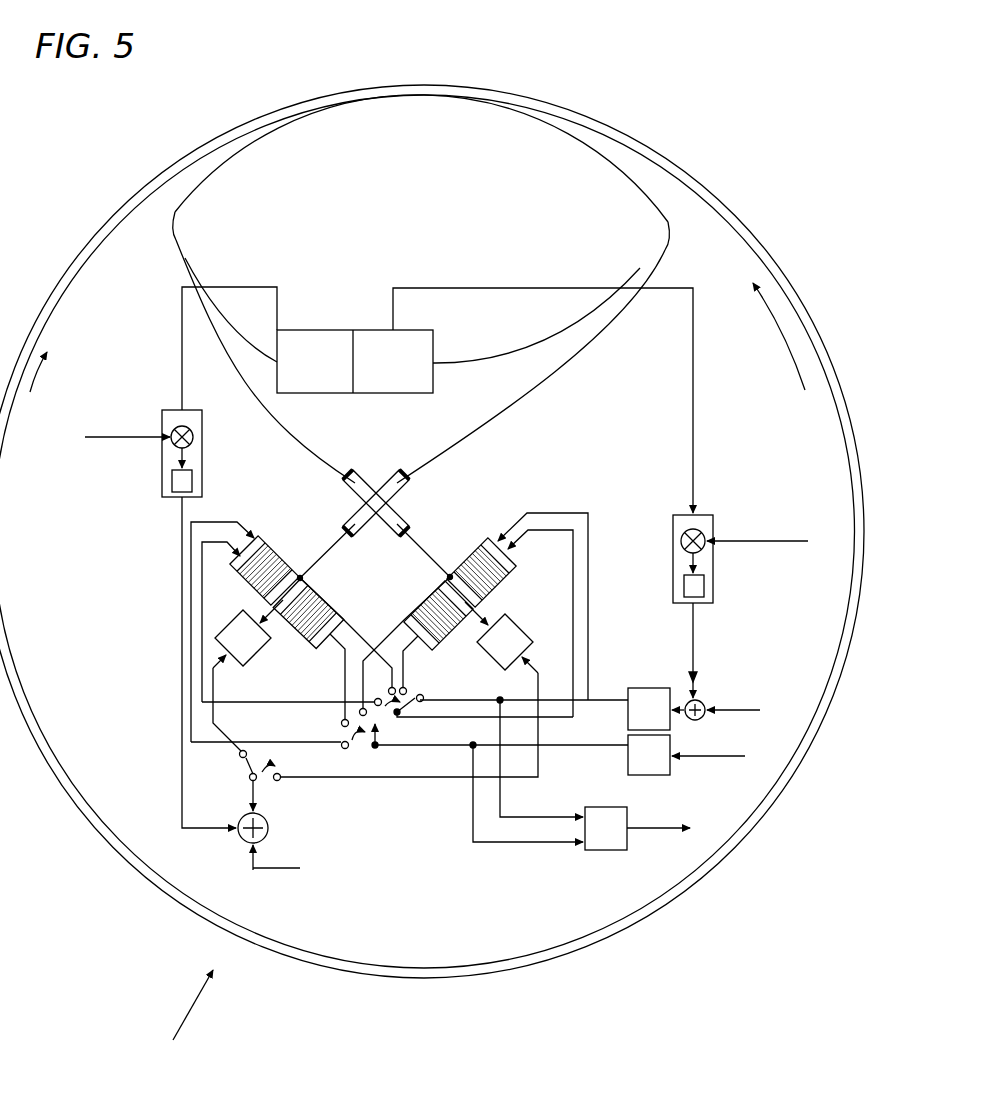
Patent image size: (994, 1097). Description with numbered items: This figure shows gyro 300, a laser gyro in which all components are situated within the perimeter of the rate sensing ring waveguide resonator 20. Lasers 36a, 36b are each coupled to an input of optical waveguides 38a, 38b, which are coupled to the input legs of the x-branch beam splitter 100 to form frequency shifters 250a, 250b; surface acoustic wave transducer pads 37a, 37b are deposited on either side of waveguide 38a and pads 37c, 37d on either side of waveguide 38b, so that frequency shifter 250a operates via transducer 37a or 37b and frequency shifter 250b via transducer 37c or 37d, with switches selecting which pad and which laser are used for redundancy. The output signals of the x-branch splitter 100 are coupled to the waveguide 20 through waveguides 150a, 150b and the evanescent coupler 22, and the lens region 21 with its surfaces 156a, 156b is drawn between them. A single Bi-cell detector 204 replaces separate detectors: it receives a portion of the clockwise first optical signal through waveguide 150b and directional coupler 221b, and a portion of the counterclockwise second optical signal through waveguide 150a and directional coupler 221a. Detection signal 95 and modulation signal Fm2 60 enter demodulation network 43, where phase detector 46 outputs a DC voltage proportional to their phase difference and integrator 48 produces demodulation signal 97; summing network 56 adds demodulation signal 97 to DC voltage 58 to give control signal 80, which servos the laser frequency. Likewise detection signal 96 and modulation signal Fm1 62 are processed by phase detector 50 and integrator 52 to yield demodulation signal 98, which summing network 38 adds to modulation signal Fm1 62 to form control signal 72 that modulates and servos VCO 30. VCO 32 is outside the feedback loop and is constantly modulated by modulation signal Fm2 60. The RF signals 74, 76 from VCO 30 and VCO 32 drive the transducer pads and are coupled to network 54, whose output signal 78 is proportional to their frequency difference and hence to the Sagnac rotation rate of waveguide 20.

The rate sensing ring waveguide resonator 20 is at (838, 425).
The evanescent coupler 22 is at (393, 99).
The gyro 300 is at (167, 1013).
The waveguide 150a is at (217, 168).
The waveguide 150b is at (600, 163).
The directional coupler 221a is at (183, 252).
The directional coupler 221b is at (643, 253).
The lens 21 is at (389, 222).
The first reflecting surface 156a is at (237, 330).
The second reflecting surface 156b is at (540, 343).
The detection signal 95 is at (270, 287).
The detection signal 96 is at (503, 287).
The Bi-cell detector 204 is at (353, 330).
The demodulation network 43 is at (203, 455).
The phase detector 46 is at (196, 432).
The integrator 48 is at (195, 478).
The modulation signal Fm2 60 is at (122, 447).
The demodulation signal 97 is at (181, 566).
The x-branch beam splitter 100 is at (392, 505).
The frequency shifter 250a is at (292, 612).
The frequency shifter 250b is at (455, 597).
The SAW transducer pad 37a is at (253, 533).
The SAW transducer pad 37b is at (322, 605).
The SAW transducer pad 37c is at (322, 640).
The SAW transducer pad 37d is at (510, 570).
The optical waveguide 38a is at (307, 578).
The optical waveguide 38b is at (443, 575).
The laser 36a is at (260, 657).
The laser 36b is at (515, 615).
The control signal 80 is at (253, 798).
The summing network 56 is at (270, 835).
The DC voltage 58 is at (291, 868).
The RF signal 74 is at (588, 710).
The RF signal 76 is at (438, 742).
The phase detector 50 is at (682, 548).
The integrator 52 is at (680, 587).
The modulation signal Fm1 62 is at (735, 543).
The demodulation signal 98 is at (700, 653).
The summing network 38 is at (704, 716).
The VCO 30 is at (646, 733).
The control signal 72 is at (682, 703).
The VCO 32 is at (650, 777).
The network 54 is at (610, 807).
The output signal 78 is at (655, 835).